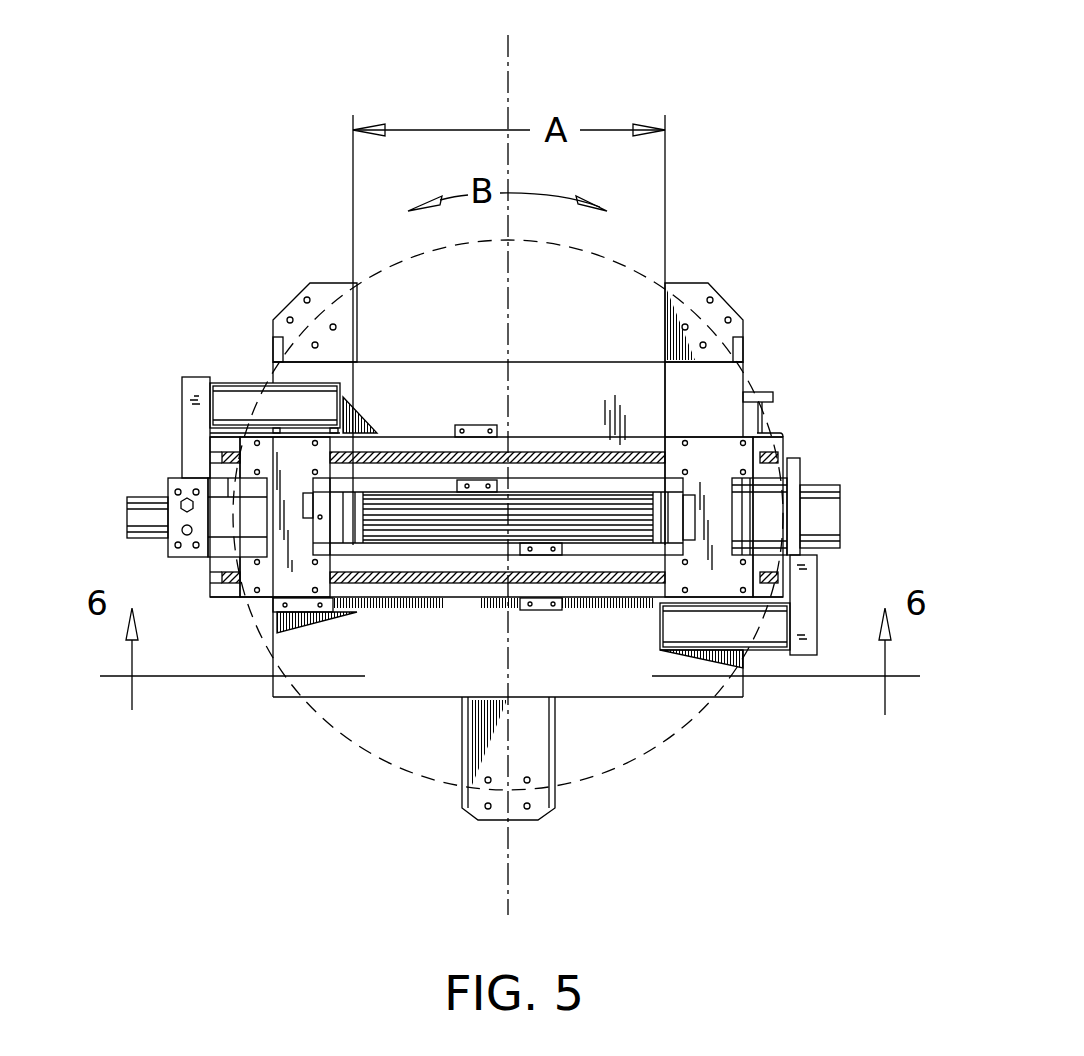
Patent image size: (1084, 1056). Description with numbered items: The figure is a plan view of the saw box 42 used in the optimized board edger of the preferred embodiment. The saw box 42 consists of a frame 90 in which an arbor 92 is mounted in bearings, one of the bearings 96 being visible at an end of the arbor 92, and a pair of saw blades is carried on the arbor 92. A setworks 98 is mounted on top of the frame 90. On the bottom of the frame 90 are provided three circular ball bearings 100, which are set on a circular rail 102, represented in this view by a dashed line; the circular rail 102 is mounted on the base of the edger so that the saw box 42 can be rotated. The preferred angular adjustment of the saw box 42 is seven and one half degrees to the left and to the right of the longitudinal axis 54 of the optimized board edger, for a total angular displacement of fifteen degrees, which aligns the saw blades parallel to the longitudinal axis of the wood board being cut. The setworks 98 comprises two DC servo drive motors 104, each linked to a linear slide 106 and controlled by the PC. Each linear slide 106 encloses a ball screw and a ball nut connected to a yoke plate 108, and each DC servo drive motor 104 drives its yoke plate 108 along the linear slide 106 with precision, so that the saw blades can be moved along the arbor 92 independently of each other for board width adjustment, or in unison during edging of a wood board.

The saw box 42 is at (775, 130).
The longitudinal axis of the optimized board edger 54 is at (507, 97).
The frame 90 is at (745, 387).
The arbor 92 is at (545, 510).
The bearing 96 is at (830, 485).
The setworks 98 is at (185, 290).
The circular ball bearings 100 is at (290, 290).
The circular rail 102 is at (645, 762).
The DC servo drive motor 104 is at (240, 378).
The linear slide 106 is at (408, 443).
The yoke plate 108 is at (265, 610).